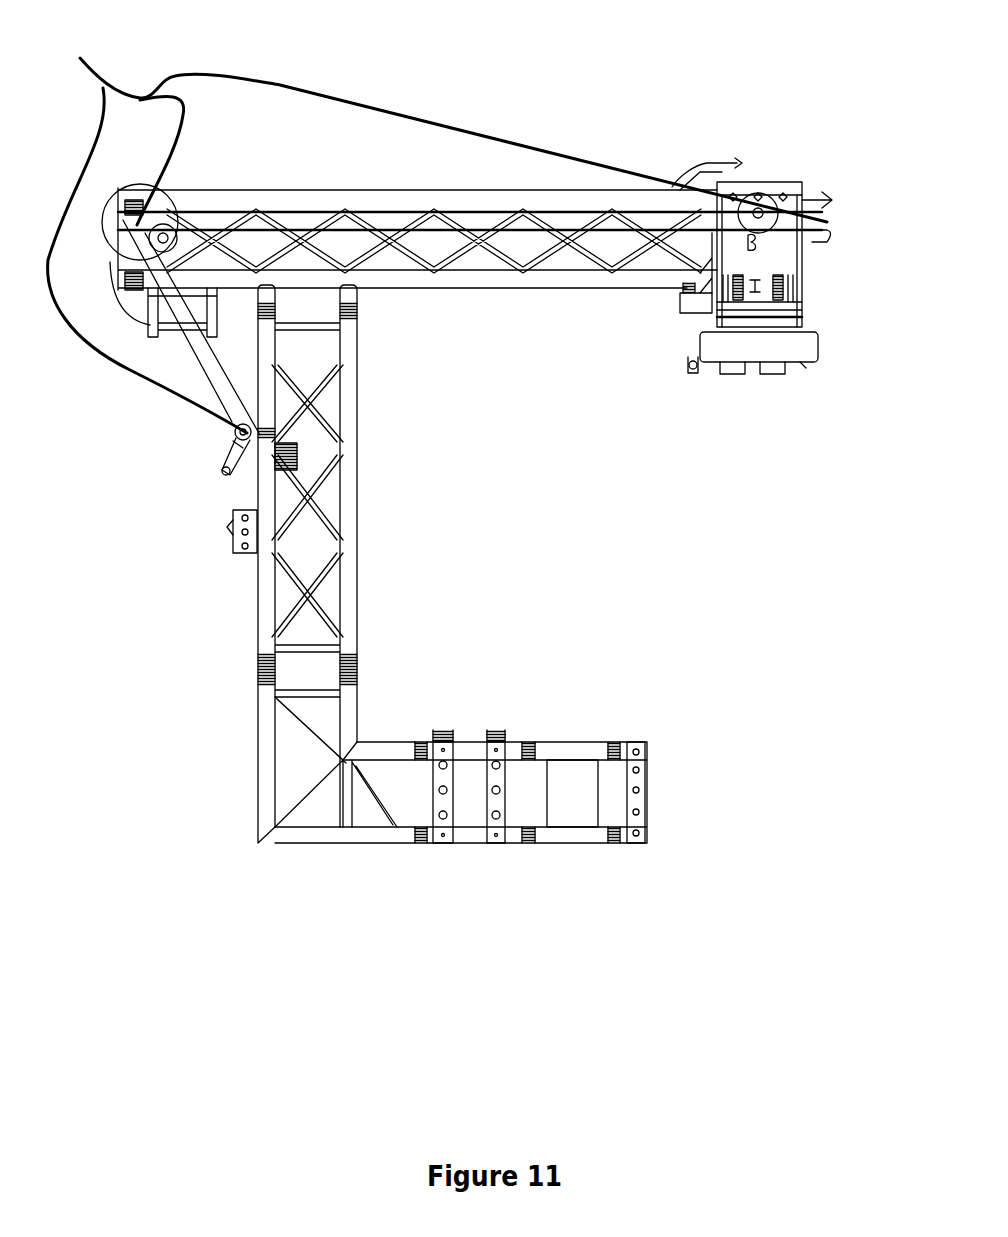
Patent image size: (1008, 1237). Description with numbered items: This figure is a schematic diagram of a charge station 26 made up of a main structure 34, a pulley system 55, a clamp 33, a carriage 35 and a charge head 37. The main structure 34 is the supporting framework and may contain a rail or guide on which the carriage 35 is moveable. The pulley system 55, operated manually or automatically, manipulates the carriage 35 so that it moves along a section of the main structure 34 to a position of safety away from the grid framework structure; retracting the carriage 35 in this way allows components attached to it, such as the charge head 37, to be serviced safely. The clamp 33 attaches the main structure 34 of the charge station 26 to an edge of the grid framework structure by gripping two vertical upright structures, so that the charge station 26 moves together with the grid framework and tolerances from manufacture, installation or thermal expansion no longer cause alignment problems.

The charge station 26 is at (225, 640).
The clamp 33 is at (643, 842).
The main structure 34 is at (368, 253).
The carriage 35 is at (780, 255).
The charge head 37 is at (790, 373).
The pulley system 55 is at (437, 232).